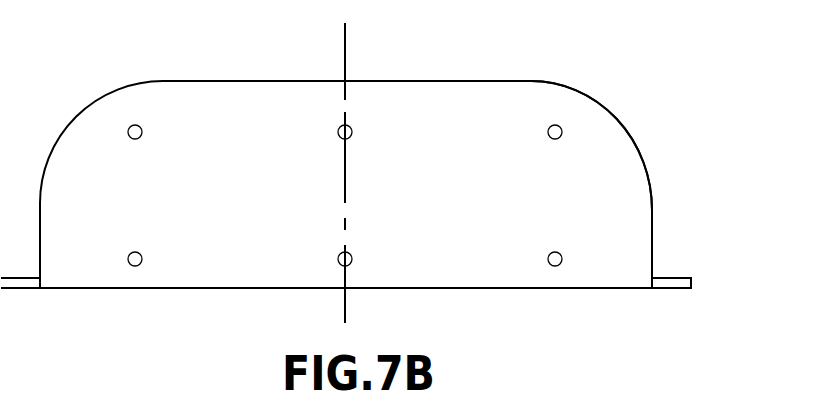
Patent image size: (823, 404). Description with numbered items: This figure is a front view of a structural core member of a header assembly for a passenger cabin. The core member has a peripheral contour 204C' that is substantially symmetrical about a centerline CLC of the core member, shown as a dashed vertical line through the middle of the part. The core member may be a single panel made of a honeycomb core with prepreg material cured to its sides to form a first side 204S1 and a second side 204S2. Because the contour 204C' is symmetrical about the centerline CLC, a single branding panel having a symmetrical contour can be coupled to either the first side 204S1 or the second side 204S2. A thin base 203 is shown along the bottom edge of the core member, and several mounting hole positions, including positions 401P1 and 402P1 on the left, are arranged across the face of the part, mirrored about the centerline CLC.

The base plate 203 is at (672, 290).
The peripheral contour 204C' is at (641, 145).
The second side 204S2 is at (652, 206).
The first side 204S1 is at (623, 230).
The centerline CLC is at (345, 48).
The first mounting hole position 401P1 is at (128, 128).
The second mounting hole position 402P1 is at (128, 265).